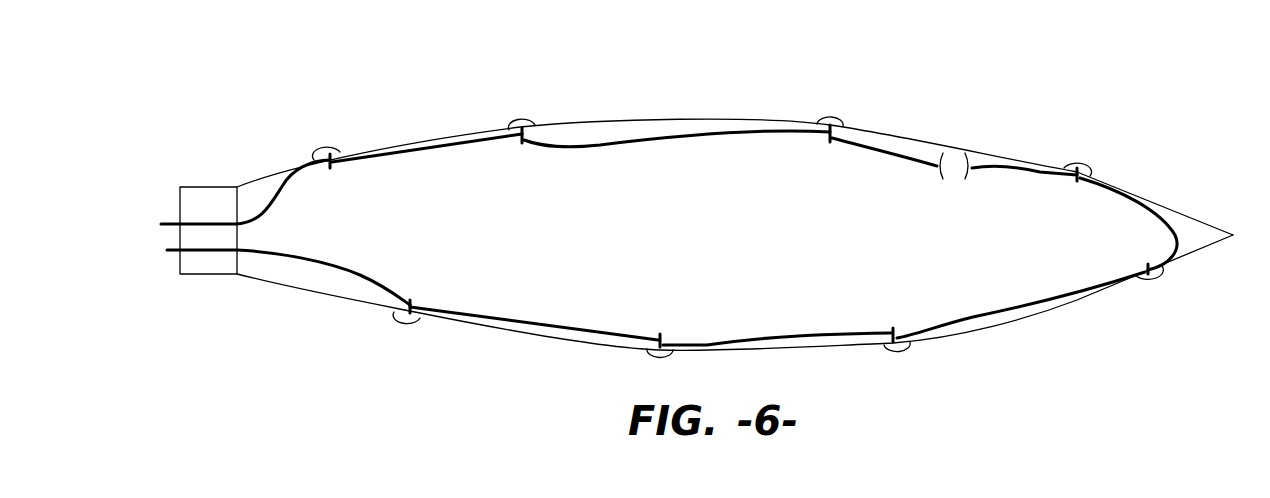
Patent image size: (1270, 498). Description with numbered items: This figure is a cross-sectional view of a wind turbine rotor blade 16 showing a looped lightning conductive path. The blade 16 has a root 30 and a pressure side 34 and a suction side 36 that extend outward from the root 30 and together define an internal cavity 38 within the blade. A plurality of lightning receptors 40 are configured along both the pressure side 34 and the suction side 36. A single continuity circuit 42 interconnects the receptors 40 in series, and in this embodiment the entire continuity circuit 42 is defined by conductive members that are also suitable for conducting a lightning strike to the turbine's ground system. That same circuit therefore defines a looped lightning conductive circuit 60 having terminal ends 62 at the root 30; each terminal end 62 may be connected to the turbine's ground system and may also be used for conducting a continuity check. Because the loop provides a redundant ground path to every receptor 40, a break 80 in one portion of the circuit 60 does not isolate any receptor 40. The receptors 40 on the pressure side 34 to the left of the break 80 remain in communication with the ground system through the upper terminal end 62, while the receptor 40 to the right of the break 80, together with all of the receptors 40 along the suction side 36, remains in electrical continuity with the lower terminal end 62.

The wind turbine rotor blade 16 is at (735, 211).
The root 30 is at (205, 192).
The pressure side 34 is at (672, 120).
The suction side 36 is at (550, 338).
The internal cavity 38 is at (448, 178).
The lightning receptors 40 is at (402, 320).
The continuity circuit 42 is at (606, 329).
The looped lightning conductive circuit 60 is at (632, 144).
The terminal ends 62 is at (172, 222).
The break 80 is at (950, 170).